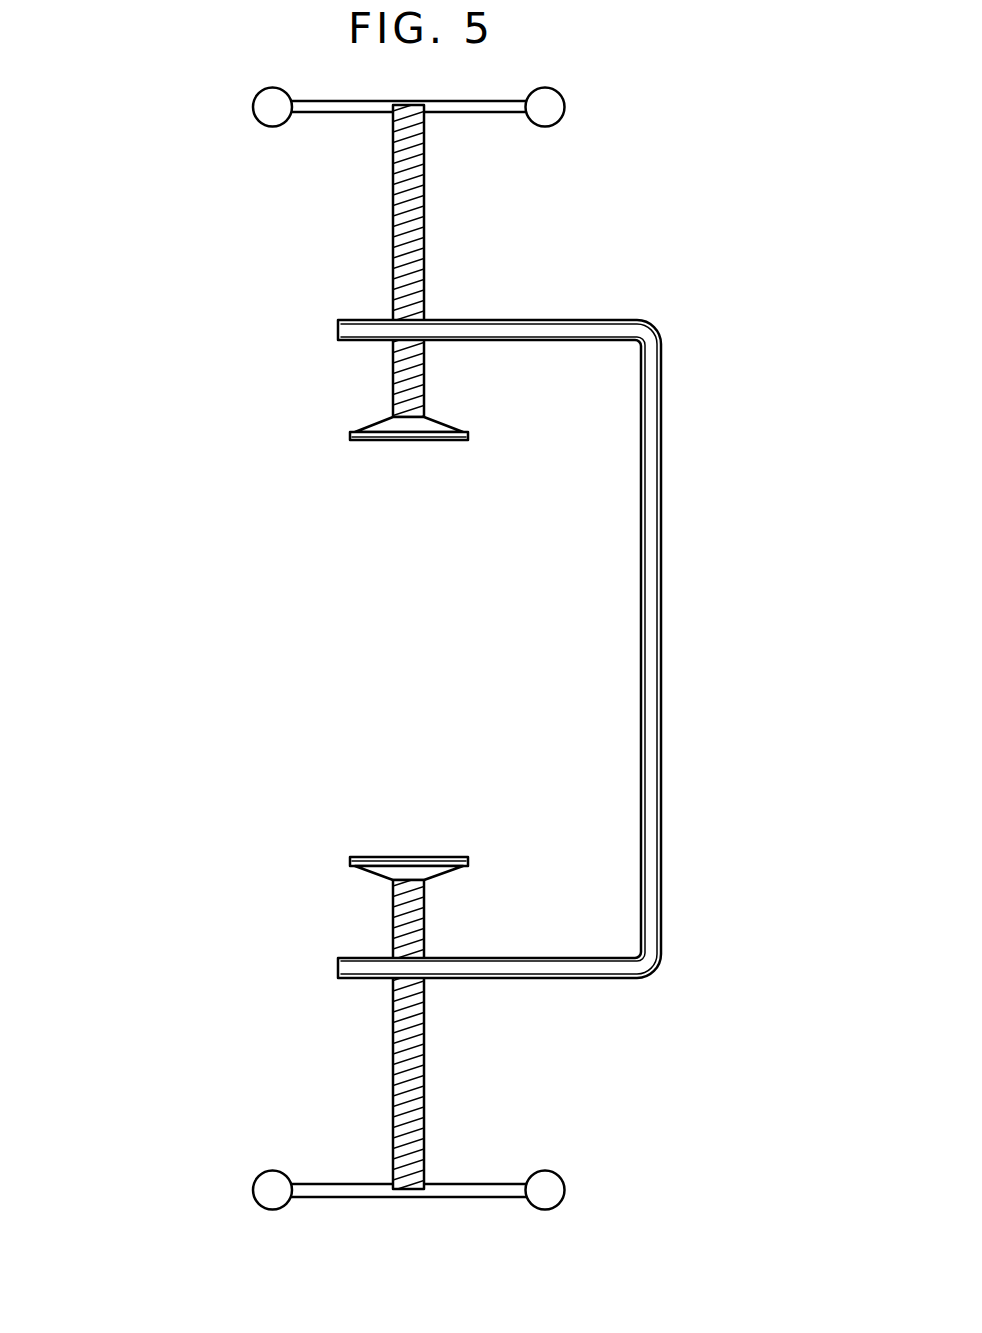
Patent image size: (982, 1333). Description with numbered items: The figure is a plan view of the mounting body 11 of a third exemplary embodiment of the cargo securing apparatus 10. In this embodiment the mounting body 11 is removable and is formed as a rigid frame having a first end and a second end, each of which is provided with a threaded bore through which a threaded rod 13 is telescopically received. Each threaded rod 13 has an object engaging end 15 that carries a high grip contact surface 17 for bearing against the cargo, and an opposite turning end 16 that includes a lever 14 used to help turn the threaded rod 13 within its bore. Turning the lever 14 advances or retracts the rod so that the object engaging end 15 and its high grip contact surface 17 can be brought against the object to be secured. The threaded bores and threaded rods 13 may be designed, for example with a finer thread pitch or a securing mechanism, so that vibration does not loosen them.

The cargo securing apparatus 10 is at (253, 593).
The mounting body 11 is at (657, 351).
The threaded rod 13 is at (422, 216).
The lever 14 is at (537, 116).
The object engaging end 15 is at (381, 419).
The turning end 16 is at (419, 1204).
The high grip contact surface 17 is at (384, 855).